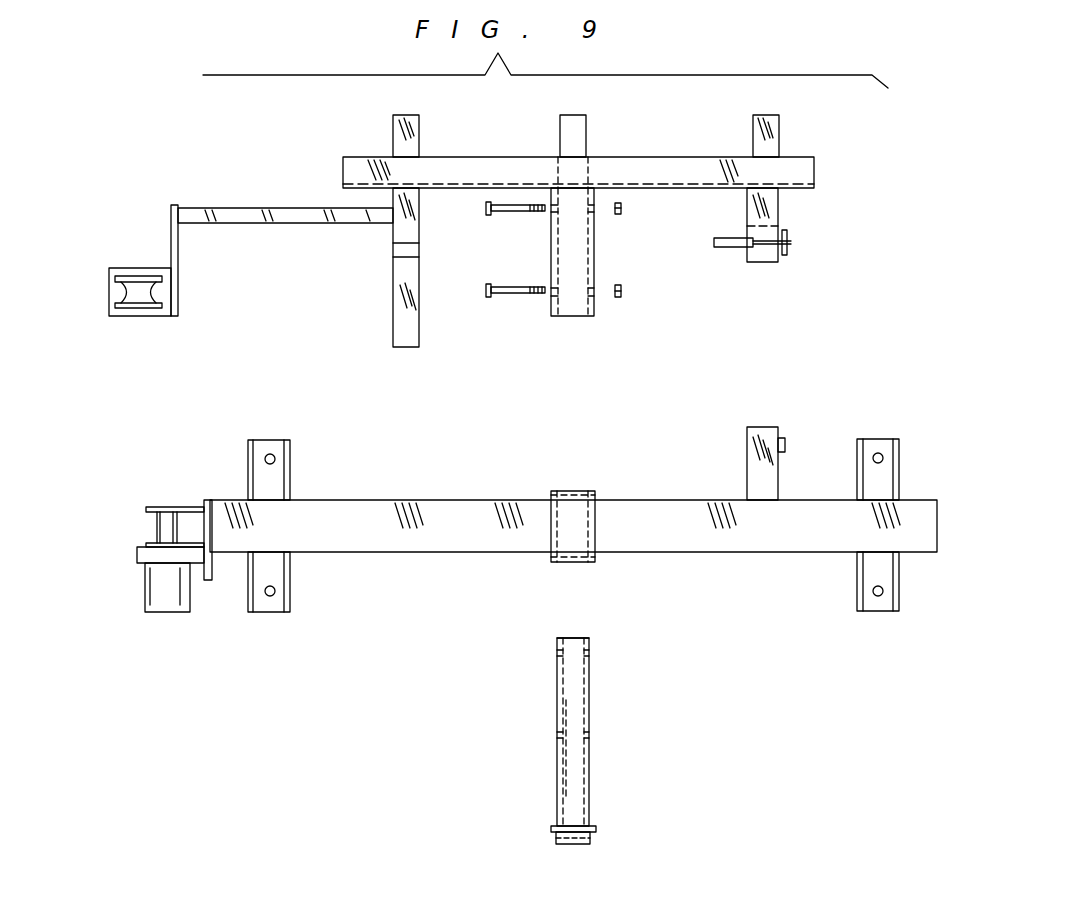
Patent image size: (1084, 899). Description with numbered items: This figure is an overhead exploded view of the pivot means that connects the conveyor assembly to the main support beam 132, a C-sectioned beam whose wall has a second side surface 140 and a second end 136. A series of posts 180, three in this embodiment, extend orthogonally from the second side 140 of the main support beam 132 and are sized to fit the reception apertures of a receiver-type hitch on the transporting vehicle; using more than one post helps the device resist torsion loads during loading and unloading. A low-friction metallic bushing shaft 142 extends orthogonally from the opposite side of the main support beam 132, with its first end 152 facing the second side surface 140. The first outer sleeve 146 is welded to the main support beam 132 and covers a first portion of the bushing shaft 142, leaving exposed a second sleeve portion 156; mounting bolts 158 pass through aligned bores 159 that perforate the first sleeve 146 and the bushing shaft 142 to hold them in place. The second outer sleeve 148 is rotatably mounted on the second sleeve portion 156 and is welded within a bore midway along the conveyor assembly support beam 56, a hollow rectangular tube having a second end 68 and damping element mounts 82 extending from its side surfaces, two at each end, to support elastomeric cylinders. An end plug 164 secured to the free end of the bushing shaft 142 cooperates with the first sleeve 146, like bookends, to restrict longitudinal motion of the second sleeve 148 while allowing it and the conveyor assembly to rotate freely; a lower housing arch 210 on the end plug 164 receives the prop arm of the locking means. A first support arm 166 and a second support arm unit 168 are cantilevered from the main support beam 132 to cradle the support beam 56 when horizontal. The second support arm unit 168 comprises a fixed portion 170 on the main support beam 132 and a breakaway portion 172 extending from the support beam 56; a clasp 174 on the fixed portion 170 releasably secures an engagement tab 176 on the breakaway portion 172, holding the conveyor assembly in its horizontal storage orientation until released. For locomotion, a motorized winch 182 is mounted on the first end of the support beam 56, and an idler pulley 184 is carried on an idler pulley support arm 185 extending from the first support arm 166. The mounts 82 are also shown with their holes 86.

The conveyor assembly support beam 56 is at (480, 535).
The second end 68 is at (947, 543).
The damping element mounts 82 is at (290, 470).
The mounting holes 86 is at (270, 454).
The main support beam 132 is at (360, 158).
The second end 136 is at (833, 170).
The second side surface 140 is at (628, 157).
The bushing shaft 142 is at (560, 704).
The first outer sleeve 146 is at (577, 257).
The second outer sleeve 148 is at (580, 520).
The bushing shaft first end 152 is at (575, 640).
The second sleeve portion 156 is at (577, 768).
The mounting bolts 158 is at (513, 287).
The aligned bores 159 is at (594, 208).
The end plug 164 is at (590, 826).
The first support arm 166 is at (398, 305).
The second support arm unit 168 is at (802, 217).
The fixed portion 170 is at (779, 217).
The breakaway portion 172 is at (757, 432).
The clasp 174 is at (722, 250).
The engagement tab 176 is at (785, 440).
The posts 180 is at (406, 128).
The motorized winch 182 is at (165, 612).
The idler pulley 184 is at (123, 290).
The idler pulley support arm 185 is at (168, 237).
The lower housing arch 210 is at (575, 845).